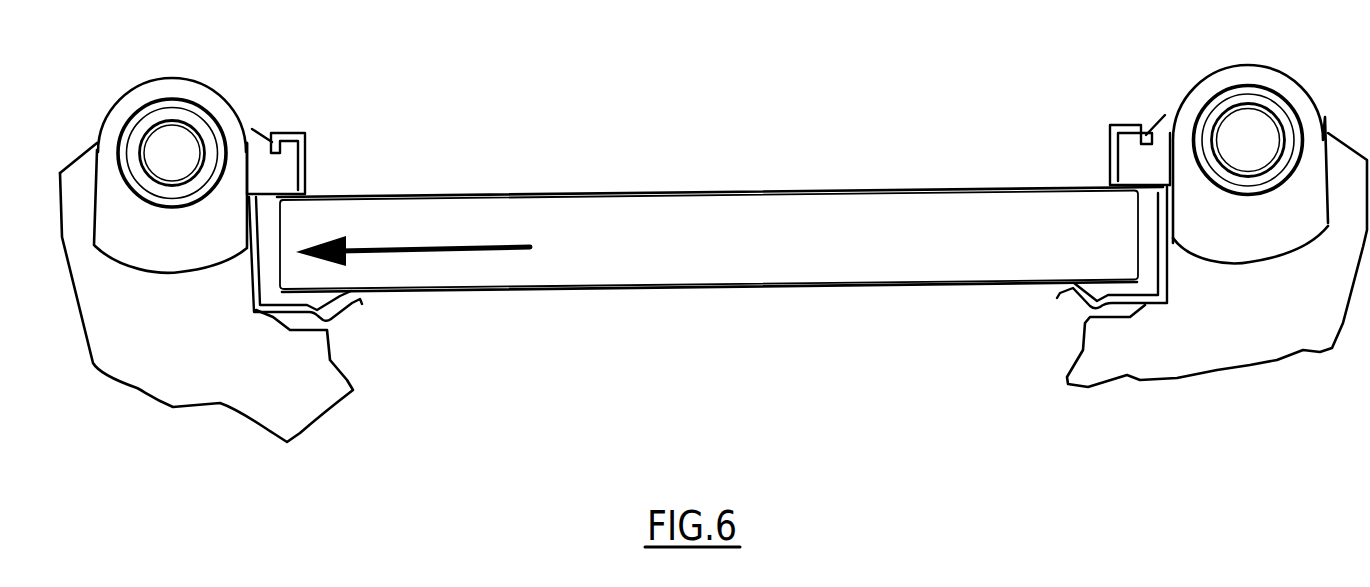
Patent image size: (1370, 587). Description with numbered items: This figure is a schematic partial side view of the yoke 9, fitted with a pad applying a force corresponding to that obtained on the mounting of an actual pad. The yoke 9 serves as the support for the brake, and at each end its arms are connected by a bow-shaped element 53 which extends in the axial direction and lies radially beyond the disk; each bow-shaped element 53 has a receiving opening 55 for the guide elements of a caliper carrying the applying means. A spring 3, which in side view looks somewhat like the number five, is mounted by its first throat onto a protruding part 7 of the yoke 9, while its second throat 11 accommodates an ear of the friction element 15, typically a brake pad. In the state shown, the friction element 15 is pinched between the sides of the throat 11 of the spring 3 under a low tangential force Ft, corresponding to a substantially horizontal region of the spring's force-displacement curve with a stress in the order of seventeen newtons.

The spring 3 is at (310, 148).
The protruding part 7 is at (273, 175).
The yoke 9 is at (147, 396).
The second throat 11 is at (265, 233).
The friction element 15 is at (785, 190).
The bow-shaped element 53 is at (217, 103).
The receiving opening 55 is at (167, 133).